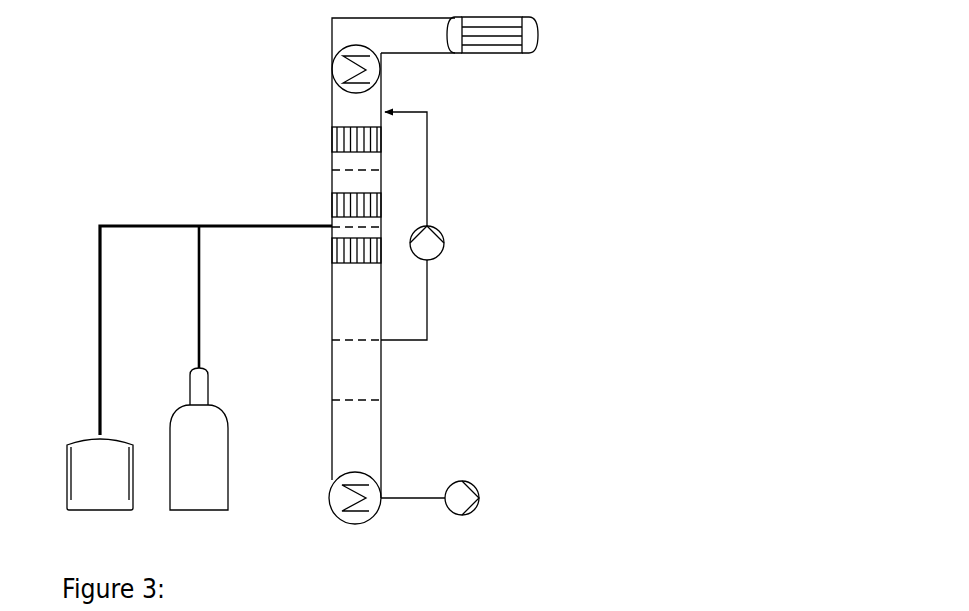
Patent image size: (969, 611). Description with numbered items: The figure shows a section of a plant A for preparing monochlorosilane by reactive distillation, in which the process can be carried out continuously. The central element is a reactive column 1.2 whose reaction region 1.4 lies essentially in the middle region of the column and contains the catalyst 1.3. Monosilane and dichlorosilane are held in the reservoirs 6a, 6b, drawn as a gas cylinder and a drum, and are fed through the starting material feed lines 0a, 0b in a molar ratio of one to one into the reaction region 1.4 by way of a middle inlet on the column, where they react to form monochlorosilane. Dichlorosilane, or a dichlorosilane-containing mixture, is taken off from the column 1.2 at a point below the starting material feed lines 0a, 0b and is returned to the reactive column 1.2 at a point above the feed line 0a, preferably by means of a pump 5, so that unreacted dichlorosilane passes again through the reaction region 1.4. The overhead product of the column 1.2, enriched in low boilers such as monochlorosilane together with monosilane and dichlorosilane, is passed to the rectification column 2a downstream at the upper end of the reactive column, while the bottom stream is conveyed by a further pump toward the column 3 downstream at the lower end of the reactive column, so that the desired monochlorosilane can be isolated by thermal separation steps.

The plant A is at (252, 72).
The reactive column 1.2 is at (352, 105).
The catalyst 1.3 is at (367, 202).
The reaction region 1.4 is at (558, 138).
The rectification column 2a is at (538, 36).
The column downstream at the lower end of the reactive column 3 is at (479, 498).
The pump 5 is at (437, 243).
The starting material feed line 0a is at (217, 297).
The starting material feed line 0b is at (216, 330).
The reservoir 6a is at (199, 439).
The reservoir 6b is at (100, 474).